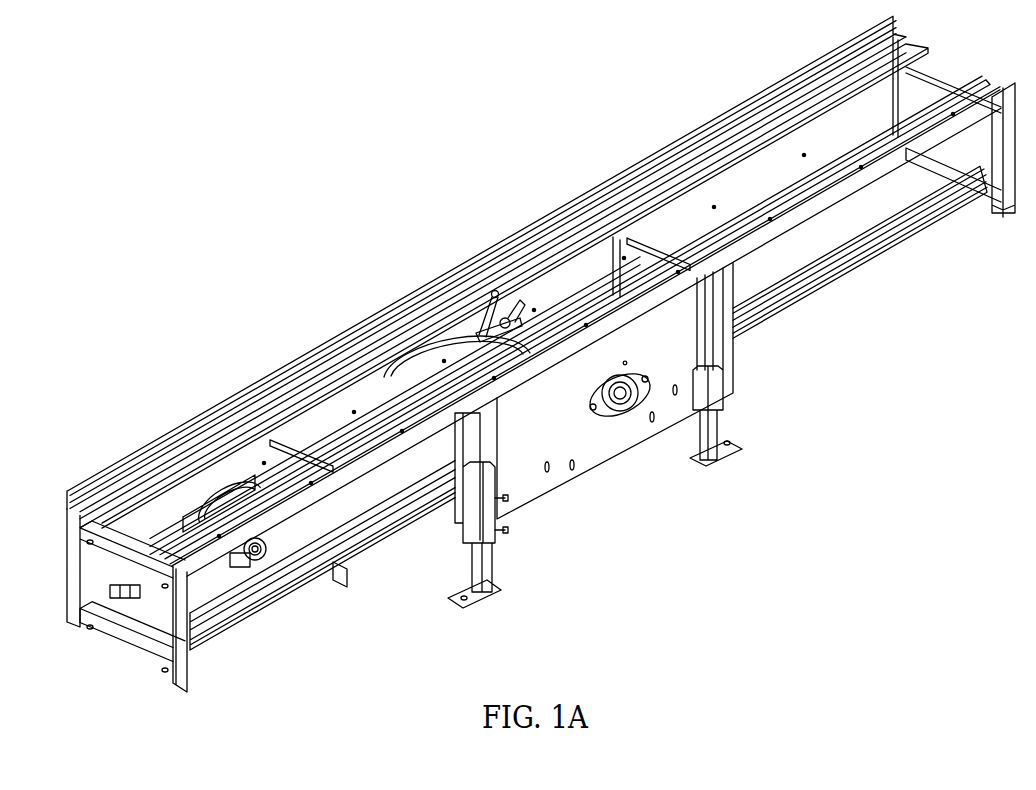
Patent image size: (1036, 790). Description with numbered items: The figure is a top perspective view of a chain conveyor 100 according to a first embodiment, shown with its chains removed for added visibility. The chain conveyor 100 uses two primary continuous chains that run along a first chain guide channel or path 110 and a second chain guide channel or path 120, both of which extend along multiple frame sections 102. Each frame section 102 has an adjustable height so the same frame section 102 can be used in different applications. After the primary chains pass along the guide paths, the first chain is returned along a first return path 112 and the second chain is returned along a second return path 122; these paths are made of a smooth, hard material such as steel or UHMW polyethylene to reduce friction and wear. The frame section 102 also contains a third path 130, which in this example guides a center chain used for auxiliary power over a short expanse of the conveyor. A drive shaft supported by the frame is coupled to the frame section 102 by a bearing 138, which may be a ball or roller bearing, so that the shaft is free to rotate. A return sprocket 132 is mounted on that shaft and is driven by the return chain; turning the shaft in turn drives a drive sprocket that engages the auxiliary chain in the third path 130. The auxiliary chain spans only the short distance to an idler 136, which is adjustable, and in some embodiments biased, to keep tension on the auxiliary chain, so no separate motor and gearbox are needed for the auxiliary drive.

The chain conveyor 100 is at (297, 144).
The frame section 102 is at (395, 273).
The first chain guide channel 110 is at (200, 470).
The first return path 112 is at (90, 630).
The second chain guide channel 120 is at (160, 588).
The second return path 122 is at (215, 632).
The third path 130 is at (334, 388).
The return sprocket 132 is at (492, 291).
The idler 136 is at (268, 537).
The bearing 138 is at (633, 403).